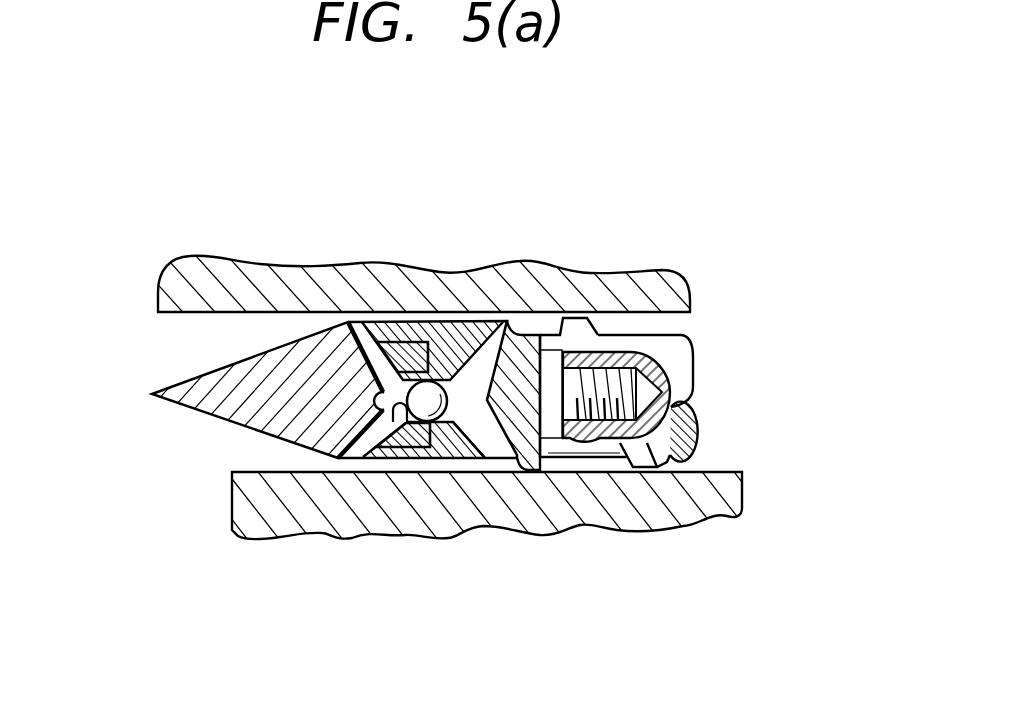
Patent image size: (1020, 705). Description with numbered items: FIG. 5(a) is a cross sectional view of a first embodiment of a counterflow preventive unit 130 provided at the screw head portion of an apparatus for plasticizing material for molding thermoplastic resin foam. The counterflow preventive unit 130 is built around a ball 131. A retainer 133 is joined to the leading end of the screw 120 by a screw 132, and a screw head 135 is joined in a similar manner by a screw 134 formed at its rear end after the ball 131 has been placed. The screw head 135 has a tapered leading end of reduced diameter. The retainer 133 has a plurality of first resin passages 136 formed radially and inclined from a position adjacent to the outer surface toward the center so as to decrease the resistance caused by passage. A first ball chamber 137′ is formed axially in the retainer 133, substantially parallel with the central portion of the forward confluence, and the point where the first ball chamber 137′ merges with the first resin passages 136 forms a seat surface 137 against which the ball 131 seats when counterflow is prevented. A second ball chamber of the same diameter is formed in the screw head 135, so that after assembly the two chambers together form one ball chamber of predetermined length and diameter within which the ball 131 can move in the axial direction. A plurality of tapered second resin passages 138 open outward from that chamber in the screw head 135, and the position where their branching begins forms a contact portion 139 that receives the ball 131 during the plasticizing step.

The counterflow preventive unit 130 is at (534, 196).
The screw 120 is at (700, 424).
The ball 131 is at (437, 382).
The screw 132 is at (627, 345).
The retainer 133 is at (467, 388).
The screw 134 is at (400, 341).
The screw head 135 is at (220, 372).
The first resin passages 136 is at (562, 318).
The seat surface 137 is at (476, 445).
The first ball chamber 137′ is at (427, 446).
The second resin passages 138 is at (350, 333).
The contact portion 139 is at (380, 416).